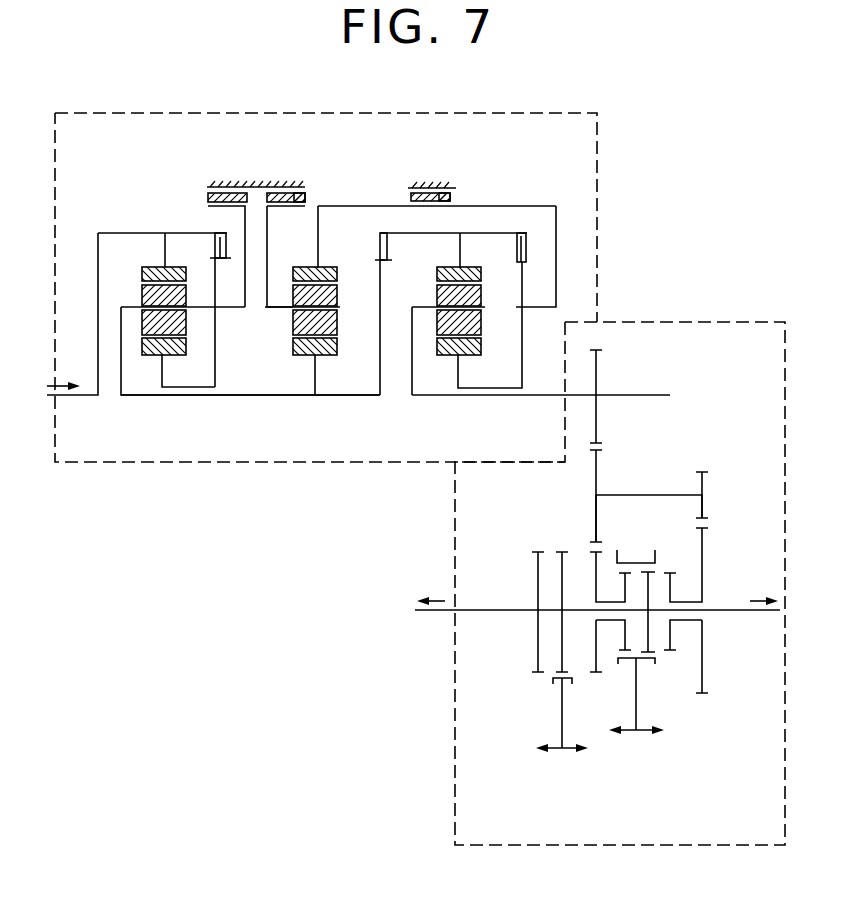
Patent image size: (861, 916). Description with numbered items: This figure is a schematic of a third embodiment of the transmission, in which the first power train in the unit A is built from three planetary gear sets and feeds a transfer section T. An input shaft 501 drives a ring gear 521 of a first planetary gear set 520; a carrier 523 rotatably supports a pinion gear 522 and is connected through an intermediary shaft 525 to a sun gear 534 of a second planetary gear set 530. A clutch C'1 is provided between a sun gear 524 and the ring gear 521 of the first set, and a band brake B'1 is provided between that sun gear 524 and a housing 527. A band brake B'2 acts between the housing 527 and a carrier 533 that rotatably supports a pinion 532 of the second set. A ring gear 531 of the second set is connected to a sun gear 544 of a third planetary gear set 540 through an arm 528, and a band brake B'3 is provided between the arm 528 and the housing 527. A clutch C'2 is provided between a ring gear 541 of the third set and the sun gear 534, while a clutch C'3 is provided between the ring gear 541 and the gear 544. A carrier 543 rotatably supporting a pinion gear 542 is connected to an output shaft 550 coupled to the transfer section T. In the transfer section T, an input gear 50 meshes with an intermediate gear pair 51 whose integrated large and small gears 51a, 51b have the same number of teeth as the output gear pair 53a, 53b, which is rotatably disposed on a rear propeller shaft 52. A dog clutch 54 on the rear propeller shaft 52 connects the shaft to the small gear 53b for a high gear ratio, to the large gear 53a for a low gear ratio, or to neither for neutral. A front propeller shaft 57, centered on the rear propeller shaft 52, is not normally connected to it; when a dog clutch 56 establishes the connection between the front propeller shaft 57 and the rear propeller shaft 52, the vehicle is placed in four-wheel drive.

The input shaft 501 is at (72, 395).
The first planetary gear set 520 is at (153, 266).
The ring gear 521 is at (178, 268).
The pinion gear 522 is at (186, 326).
The carrier 523 is at (127, 307).
The sun gear 524 is at (184, 351).
The intermediary shaft 525 is at (270, 395).
The housing 527 is at (297, 187).
The arm 528 is at (355, 205).
The second planetary gear set 530 is at (330, 266).
The ring gear 531 is at (330, 272).
The pinion 532 is at (335, 318).
The carrier 533 is at (268, 307).
The sun gear 534 is at (332, 351).
The third planetary gear set 540 is at (476, 260).
The ring gear 541 is at (478, 280).
The pinion gear 542 is at (477, 322).
The carrier 543 is at (414, 302).
The sun gear 544 is at (476, 351).
The output shaft 550 is at (523, 395).
The input gear 50 is at (597, 376).
The intermediate gear pair 51 is at (597, 476).
The large gear 51a is at (596, 513).
The small gear 51b is at (702, 505).
The rear propeller shaft 52 is at (730, 610).
The large gear 53a is at (702, 562).
The small gear 53b is at (596, 563).
The dog clutch 54 is at (656, 664).
The dog clutch 56 is at (553, 678).
The front propeller shaft 57 is at (422, 618).
The unit A is at (232, 462).
The transfer section T is at (455, 772).
The band brake B'1 is at (256, 226).
The band brake B'2 is at (303, 226).
The band brake B'3 is at (432, 173).
The clutch C'1 is at (183, 310).
The clutch C'2 is at (451, 260).
The clutch C'3 is at (550, 260).